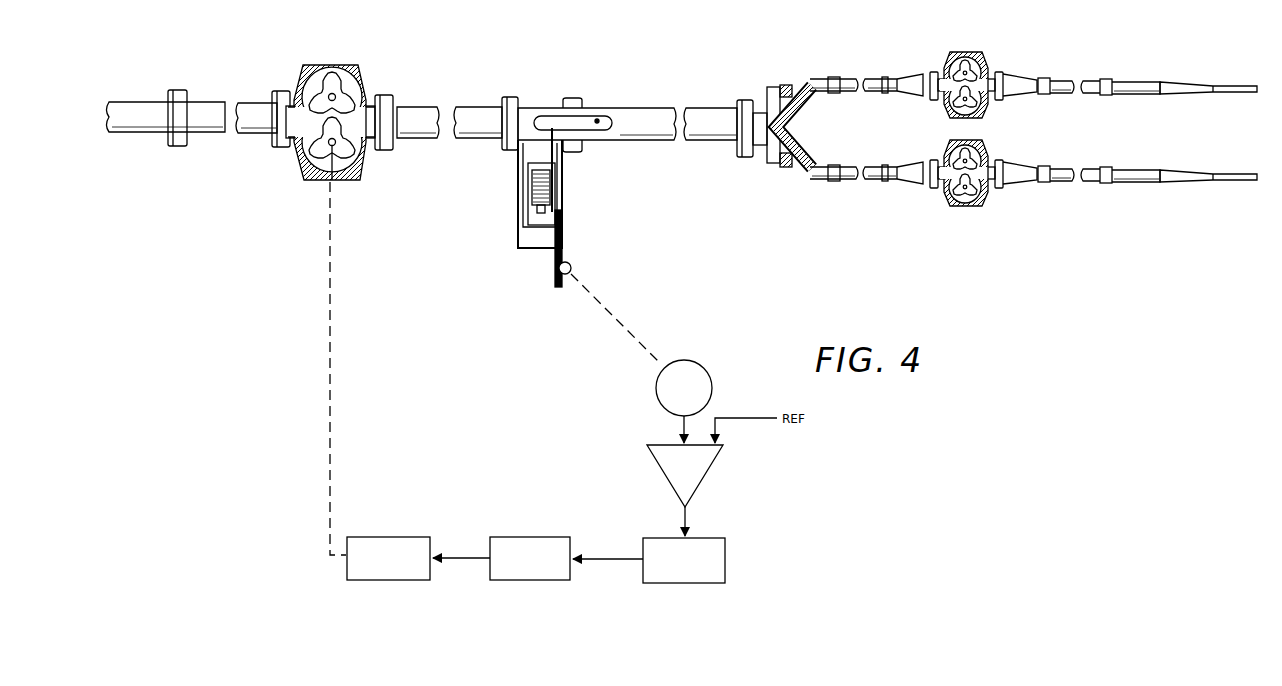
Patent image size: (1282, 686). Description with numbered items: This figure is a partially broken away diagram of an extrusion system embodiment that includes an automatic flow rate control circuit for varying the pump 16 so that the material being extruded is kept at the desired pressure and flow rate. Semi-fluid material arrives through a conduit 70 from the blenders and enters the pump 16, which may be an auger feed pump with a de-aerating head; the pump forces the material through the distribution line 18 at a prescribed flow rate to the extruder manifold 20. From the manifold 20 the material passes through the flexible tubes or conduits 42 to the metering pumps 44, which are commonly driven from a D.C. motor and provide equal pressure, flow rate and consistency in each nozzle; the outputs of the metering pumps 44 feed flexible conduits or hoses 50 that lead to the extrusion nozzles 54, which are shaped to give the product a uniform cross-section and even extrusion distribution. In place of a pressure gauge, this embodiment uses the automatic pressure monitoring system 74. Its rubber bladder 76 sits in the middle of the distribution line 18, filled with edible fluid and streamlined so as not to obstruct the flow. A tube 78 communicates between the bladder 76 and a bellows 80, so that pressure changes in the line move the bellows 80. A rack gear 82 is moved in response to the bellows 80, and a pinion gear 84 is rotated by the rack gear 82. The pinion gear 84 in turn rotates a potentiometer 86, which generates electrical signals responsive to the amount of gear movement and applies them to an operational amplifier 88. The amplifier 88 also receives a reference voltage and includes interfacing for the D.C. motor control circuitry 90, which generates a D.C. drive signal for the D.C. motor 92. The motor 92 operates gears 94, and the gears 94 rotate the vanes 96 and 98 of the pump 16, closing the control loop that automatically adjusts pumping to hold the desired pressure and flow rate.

The pump 16 is at (328, 116).
The distribution line 18 is at (470, 110).
The extruder manifold 20 is at (788, 86).
The flexible tubes or conduits 42 is at (849, 78).
The metering pumps 44 is at (967, 52).
The flexible conduits or hoses 50 is at (1062, 82).
The extrusion nozzles 54 is at (1228, 172).
The conduit 70 is at (212, 112).
The automatic pressure monitoring system 74 is at (597, 99).
The rubber bladder 76 is at (599, 118).
The tube 78 is at (548, 150).
The bellows 80 is at (532, 194).
The rack gear 82 is at (560, 250).
The pinion gear 84 is at (572, 267).
The potentiometer 86 is at (703, 374).
The operational amplifier 88 is at (658, 459).
The D.C. motor control circuitry 90 is at (708, 557).
The D.C. motor 92 is at (551, 550).
The gears 94 is at (410, 548).
The vane 96 is at (322, 152).
The vane 98 is at (344, 100).